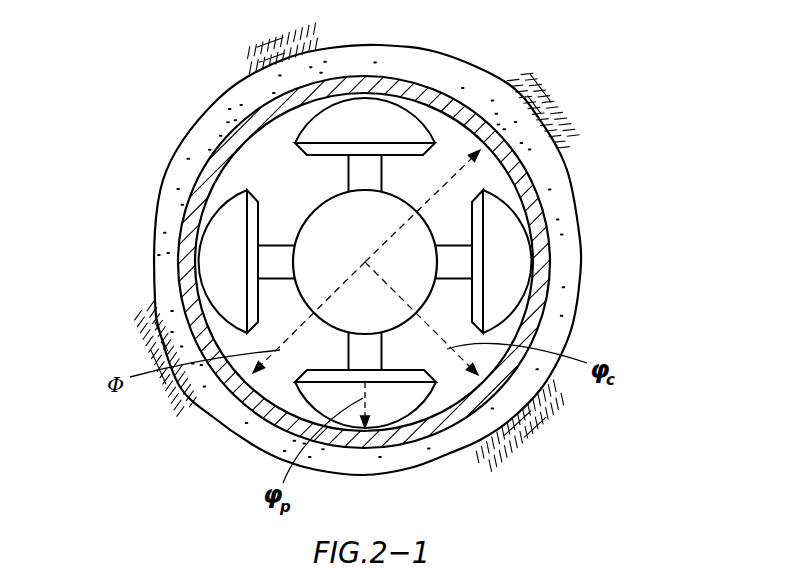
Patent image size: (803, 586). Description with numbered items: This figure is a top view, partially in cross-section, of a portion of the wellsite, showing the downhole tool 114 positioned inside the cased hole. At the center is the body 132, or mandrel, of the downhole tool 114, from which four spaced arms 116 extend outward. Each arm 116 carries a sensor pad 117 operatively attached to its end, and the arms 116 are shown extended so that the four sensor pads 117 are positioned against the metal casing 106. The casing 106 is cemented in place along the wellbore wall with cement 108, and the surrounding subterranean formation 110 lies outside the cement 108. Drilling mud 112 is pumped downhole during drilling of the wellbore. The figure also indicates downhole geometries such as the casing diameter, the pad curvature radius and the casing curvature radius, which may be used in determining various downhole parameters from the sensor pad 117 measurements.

The metal casing 106 is at (182, 262).
The cement 108 is at (190, 165).
The subterranean formation 110 is at (243, 80).
The drilling mud 112 is at (283, 157).
The downhole tool 114 is at (458, 187).
The arm 116 is at (472, 262).
The sensor pad 117 is at (514, 325).
The body 132 is at (392, 207).